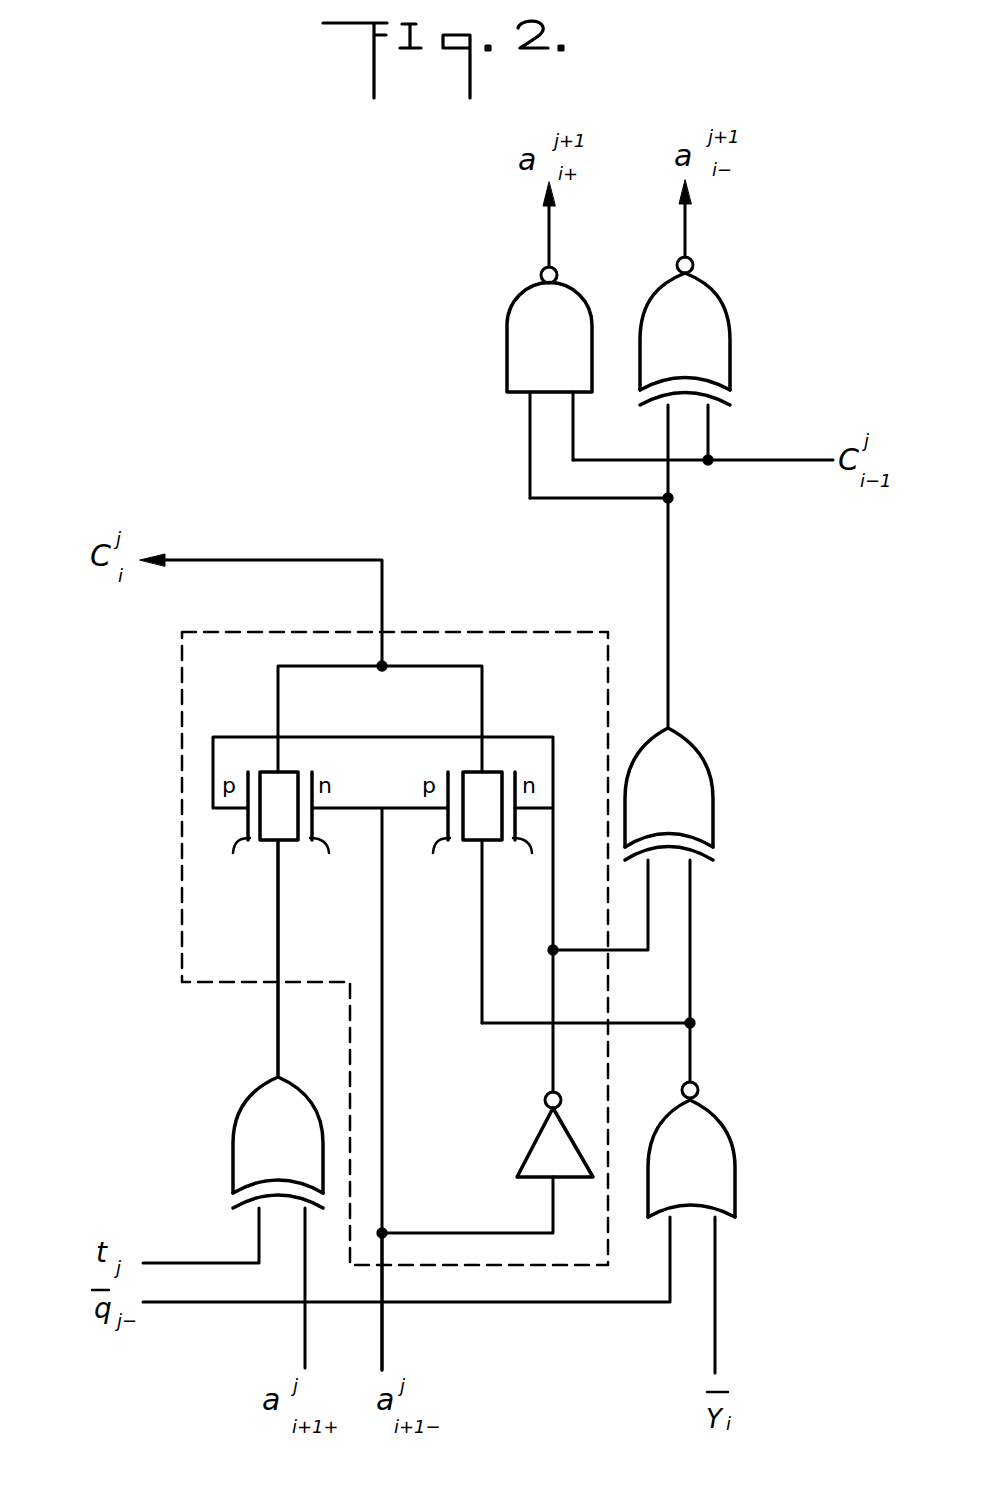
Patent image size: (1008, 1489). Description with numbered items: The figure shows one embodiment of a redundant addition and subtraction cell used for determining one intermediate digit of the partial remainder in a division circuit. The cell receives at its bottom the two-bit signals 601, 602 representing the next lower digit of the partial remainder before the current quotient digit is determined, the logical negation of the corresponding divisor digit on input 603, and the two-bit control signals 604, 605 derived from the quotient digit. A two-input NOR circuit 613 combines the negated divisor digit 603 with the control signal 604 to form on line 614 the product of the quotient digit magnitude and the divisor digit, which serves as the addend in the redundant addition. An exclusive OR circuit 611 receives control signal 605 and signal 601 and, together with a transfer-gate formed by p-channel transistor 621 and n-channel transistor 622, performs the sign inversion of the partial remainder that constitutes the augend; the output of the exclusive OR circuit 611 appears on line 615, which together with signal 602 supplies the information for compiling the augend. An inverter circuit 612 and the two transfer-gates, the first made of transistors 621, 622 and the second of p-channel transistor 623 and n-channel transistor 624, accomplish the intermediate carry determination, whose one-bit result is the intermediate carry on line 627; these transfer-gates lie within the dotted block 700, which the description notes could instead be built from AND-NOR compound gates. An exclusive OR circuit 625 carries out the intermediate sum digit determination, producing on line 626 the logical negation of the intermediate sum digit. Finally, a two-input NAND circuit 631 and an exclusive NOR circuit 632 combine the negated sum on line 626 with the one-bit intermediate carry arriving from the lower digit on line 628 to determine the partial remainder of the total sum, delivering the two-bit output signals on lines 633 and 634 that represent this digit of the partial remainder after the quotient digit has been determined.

The two-bit partial remainder digit signal a(i+1)+^j 601 is at (303, 1350).
The two-bit partial remainder digit signal a(i+1)-^j 602 is at (384, 1345).
The negated divisor digit signal Y-bar_i 603 is at (717, 1335).
The control signal q-bar_j- 604 is at (195, 1307).
The control signal t_j 605 is at (197, 1260).
The exclusive OR circuit 611 is at (252, 1104).
The inverter circuit 612 is at (538, 1141).
The two-input NOR circuit 613 is at (737, 1150).
The addend line 614 is at (692, 1050).
The augend information line 615 is at (278, 1027).
The p-channel transistor 621 is at (250, 829).
The n-channel transistor 622 is at (333, 829).
The p-channel transistor 623 is at (452, 829).
The n-channel transistor 624 is at (518, 829).
The exclusive OR circuit 625 is at (710, 768).
The negated intermediate sum line 626 is at (672, 663).
The intermediate carry output line 627 is at (268, 557).
The intermediate carry input line 628 is at (773, 463).
The two-input NAND circuit 631 is at (522, 296).
The exclusive NOR circuit 632 is at (672, 306).
The output line a_i+^(j+1) 633 is at (549, 237).
The output line a_i-^(j+1) 634 is at (685, 235).
The dotted block 700 is at (535, 628).